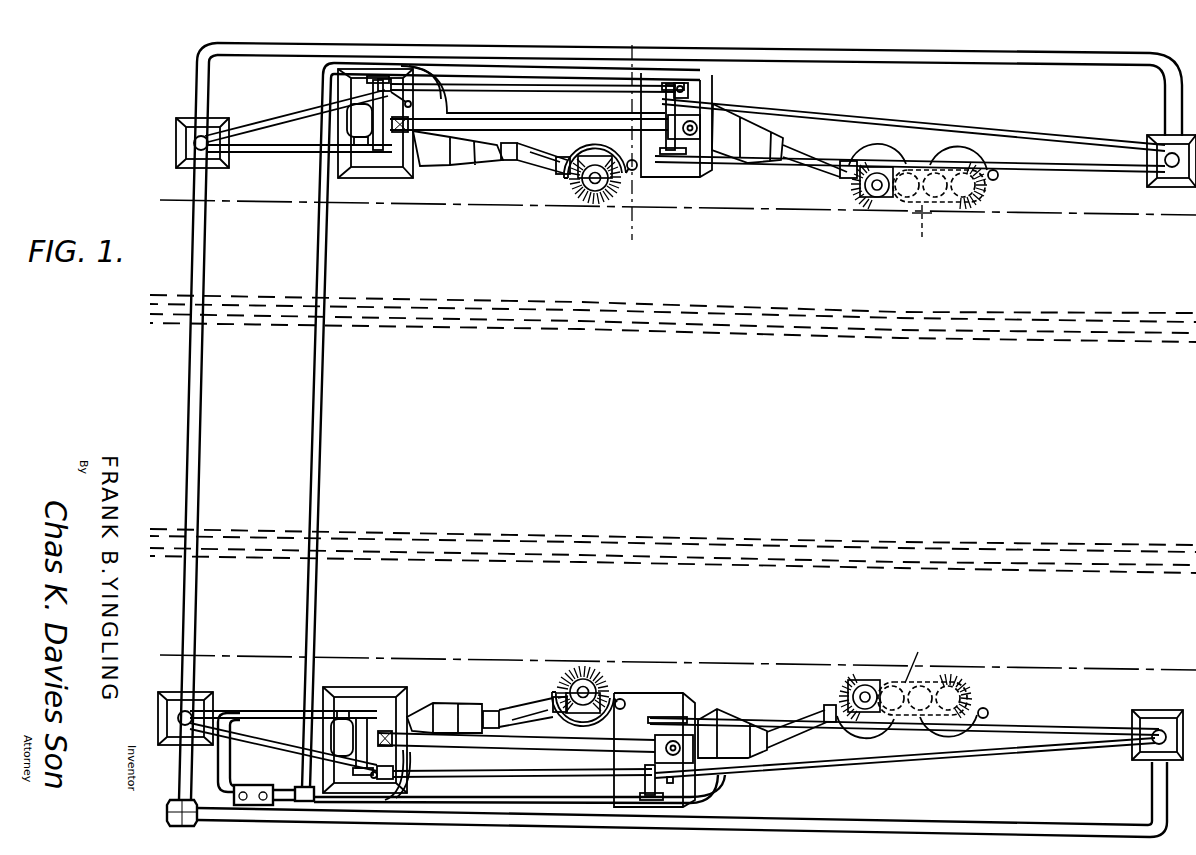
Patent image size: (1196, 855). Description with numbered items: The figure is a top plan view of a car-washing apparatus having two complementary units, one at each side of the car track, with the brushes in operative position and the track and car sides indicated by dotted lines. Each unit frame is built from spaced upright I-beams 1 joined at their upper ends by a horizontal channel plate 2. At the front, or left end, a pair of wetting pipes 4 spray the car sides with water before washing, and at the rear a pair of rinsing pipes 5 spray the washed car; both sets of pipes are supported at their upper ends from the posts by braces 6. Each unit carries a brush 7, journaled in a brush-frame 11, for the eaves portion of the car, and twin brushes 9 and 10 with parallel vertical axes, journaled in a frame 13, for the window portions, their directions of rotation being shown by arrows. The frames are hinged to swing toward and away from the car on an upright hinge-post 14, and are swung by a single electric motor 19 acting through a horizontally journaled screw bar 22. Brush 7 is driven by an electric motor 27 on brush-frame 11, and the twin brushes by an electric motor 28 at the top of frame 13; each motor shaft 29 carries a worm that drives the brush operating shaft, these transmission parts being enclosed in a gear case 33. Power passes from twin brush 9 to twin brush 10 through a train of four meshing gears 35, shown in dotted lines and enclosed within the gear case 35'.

The I-beam 1 is at (385, 163).
The channel plate 2 is at (540, 119).
The wetting pipe 4 is at (144, 722).
The rinsing pipe 5 is at (1172, 168).
The brace 6 is at (291, 150).
The brush 7 is at (612, 220).
The twin brush 9 is at (893, 226).
The twin brush 10 is at (946, 440).
The brush-frame 11 is at (510, 160).
The frame 13 is at (815, 168).
The hinge-post 14 is at (683, 128).
The electric motor 19 is at (360, 118).
The screw bar 22 is at (474, 86).
The electric motor 27 is at (468, 156).
The electric motor 28 is at (753, 132).
The motor shaft 29 is at (542, 170).
The gear case 33 is at (580, 190).
The meshing gears 35 is at (945, 234).
The gear case 35' is at (933, 659).